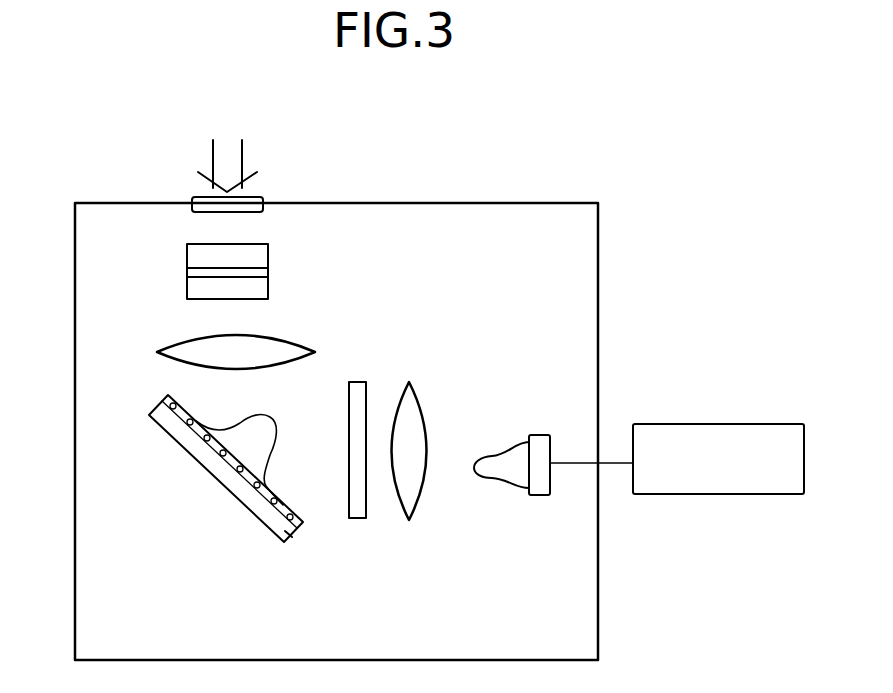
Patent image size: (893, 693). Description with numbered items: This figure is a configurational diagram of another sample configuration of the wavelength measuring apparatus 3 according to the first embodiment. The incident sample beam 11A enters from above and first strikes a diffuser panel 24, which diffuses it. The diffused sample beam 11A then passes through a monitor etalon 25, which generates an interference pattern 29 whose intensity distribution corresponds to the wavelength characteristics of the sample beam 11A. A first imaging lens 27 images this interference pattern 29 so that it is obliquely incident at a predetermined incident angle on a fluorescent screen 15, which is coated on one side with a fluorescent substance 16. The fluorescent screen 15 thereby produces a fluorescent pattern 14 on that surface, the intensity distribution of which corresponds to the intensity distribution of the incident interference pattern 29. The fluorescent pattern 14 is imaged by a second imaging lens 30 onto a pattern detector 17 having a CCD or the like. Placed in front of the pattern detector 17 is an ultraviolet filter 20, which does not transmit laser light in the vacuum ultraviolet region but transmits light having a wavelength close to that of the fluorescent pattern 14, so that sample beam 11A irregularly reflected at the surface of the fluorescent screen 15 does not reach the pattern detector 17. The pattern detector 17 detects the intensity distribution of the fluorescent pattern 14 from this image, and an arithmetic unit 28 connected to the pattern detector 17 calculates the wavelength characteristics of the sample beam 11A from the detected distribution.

The wavelength measuring apparatus 3 is at (652, 194).
The sample beam 11A is at (233, 158).
The diffuser panel 24 is at (258, 213).
The monitor etalon 25 is at (268, 257).
The first imaging lens 27 is at (185, 340).
The ultraviolet filter 20 is at (358, 380).
The second imaging lens 30 is at (420, 400).
The fluorescent screen 15 is at (290, 543).
The fluorescent substance 16 is at (268, 457).
The interference pattern 29 is at (265, 475).
The fluorescent pattern 14 is at (502, 450).
The pattern detector 17 is at (542, 497).
The arithmetic unit 28 is at (712, 495).